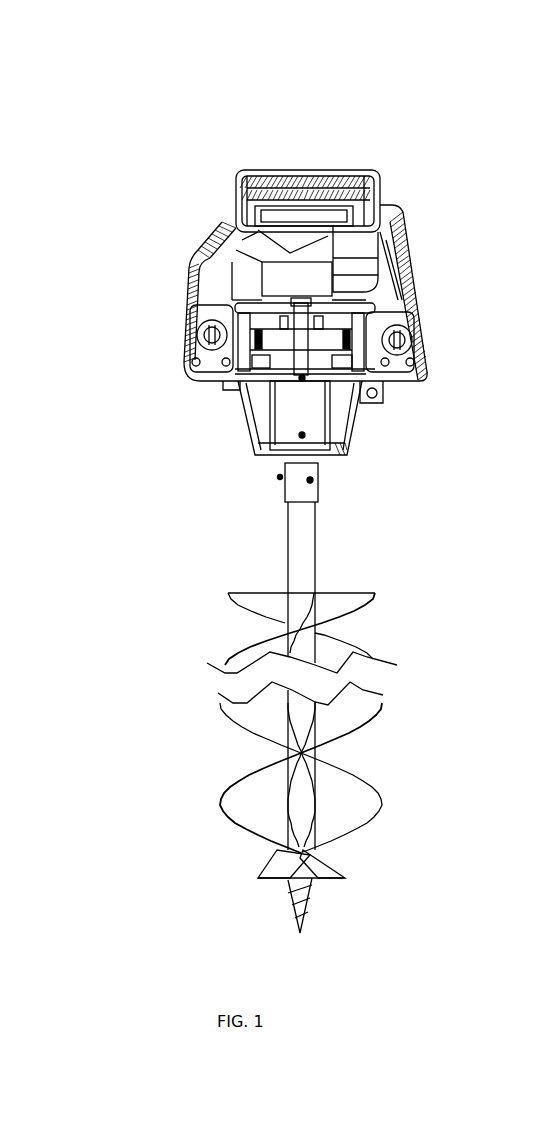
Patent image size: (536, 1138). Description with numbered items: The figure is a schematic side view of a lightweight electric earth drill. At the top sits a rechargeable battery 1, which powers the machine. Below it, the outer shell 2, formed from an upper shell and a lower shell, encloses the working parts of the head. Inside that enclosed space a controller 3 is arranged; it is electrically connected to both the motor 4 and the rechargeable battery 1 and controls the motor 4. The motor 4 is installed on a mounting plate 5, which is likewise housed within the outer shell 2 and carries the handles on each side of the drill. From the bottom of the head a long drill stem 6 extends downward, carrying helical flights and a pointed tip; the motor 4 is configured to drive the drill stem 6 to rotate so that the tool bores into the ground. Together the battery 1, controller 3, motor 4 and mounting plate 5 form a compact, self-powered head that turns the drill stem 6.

The rechargeable battery 1 is at (240, 176).
The outer shell 2 is at (228, 240).
The controller 3 is at (277, 288).
The motor 4 is at (270, 323).
The mounting plate 5 is at (190, 366).
The drill stem 6 is at (300, 513).